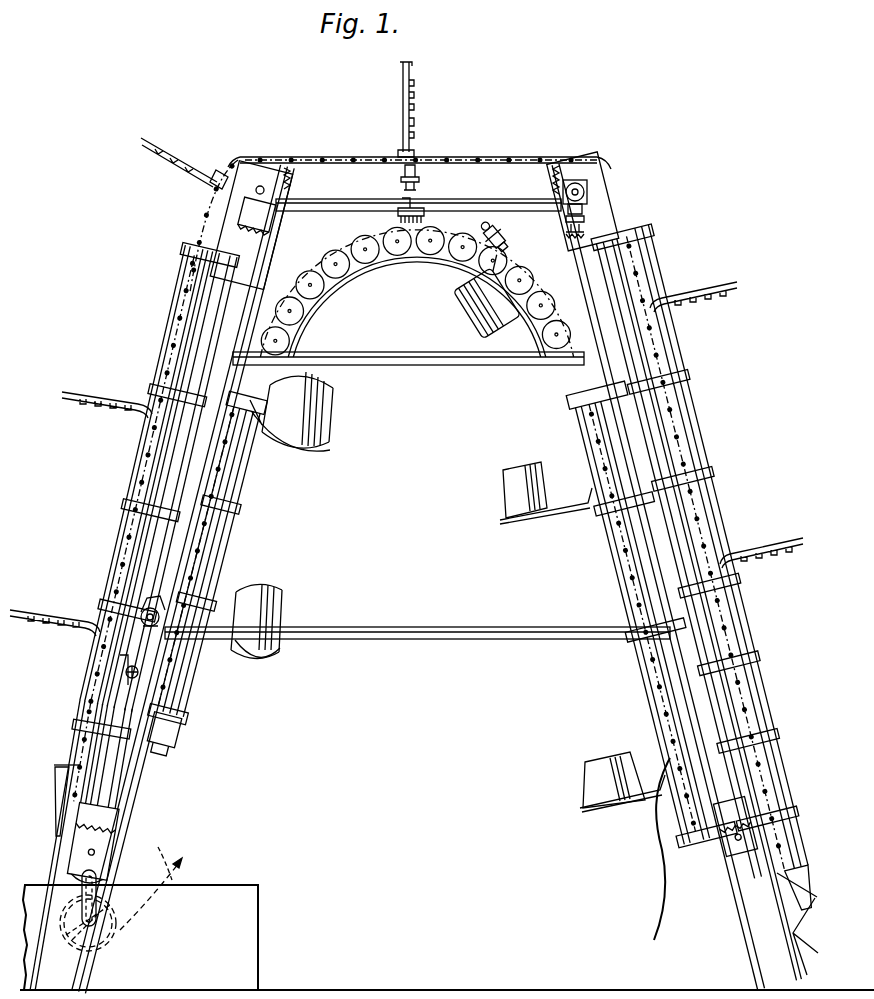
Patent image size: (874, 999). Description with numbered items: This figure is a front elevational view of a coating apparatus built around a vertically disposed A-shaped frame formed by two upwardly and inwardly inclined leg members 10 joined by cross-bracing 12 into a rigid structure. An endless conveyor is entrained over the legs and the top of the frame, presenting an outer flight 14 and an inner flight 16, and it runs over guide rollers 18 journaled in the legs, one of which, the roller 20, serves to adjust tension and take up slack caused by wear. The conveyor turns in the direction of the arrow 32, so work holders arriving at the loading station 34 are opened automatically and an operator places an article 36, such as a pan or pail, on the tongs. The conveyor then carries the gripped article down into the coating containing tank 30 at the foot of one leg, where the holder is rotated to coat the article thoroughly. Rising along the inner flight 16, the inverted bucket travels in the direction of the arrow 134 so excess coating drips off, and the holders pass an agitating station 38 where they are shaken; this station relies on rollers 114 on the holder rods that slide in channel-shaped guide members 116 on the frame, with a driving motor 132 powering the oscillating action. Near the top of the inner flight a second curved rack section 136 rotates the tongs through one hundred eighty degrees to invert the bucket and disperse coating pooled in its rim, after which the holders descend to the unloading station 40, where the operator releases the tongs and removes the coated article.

The leg members 10 is at (313, 243).
The cross-bracing 12 is at (470, 208).
The outer flight 14 is at (319, 157).
The inner flight 16 is at (578, 382).
The guide rollers 18 is at (265, 176).
The tension adjusting guide roller 20 is at (587, 214).
The coating containing tank 30 is at (199, 902).
The arrow 32 is at (121, 887).
The loading station 34 is at (53, 796).
The article 36 is at (266, 600).
The agitating station 38 is at (196, 699).
The unloading station 40 is at (650, 738).
The rollers 114 is at (157, 400).
The channel-shaped guide members 116 is at (222, 552).
The driving motor 132 is at (160, 607).
The arrow 134 is at (290, 486).
The second curved rack section 136 is at (398, 214).